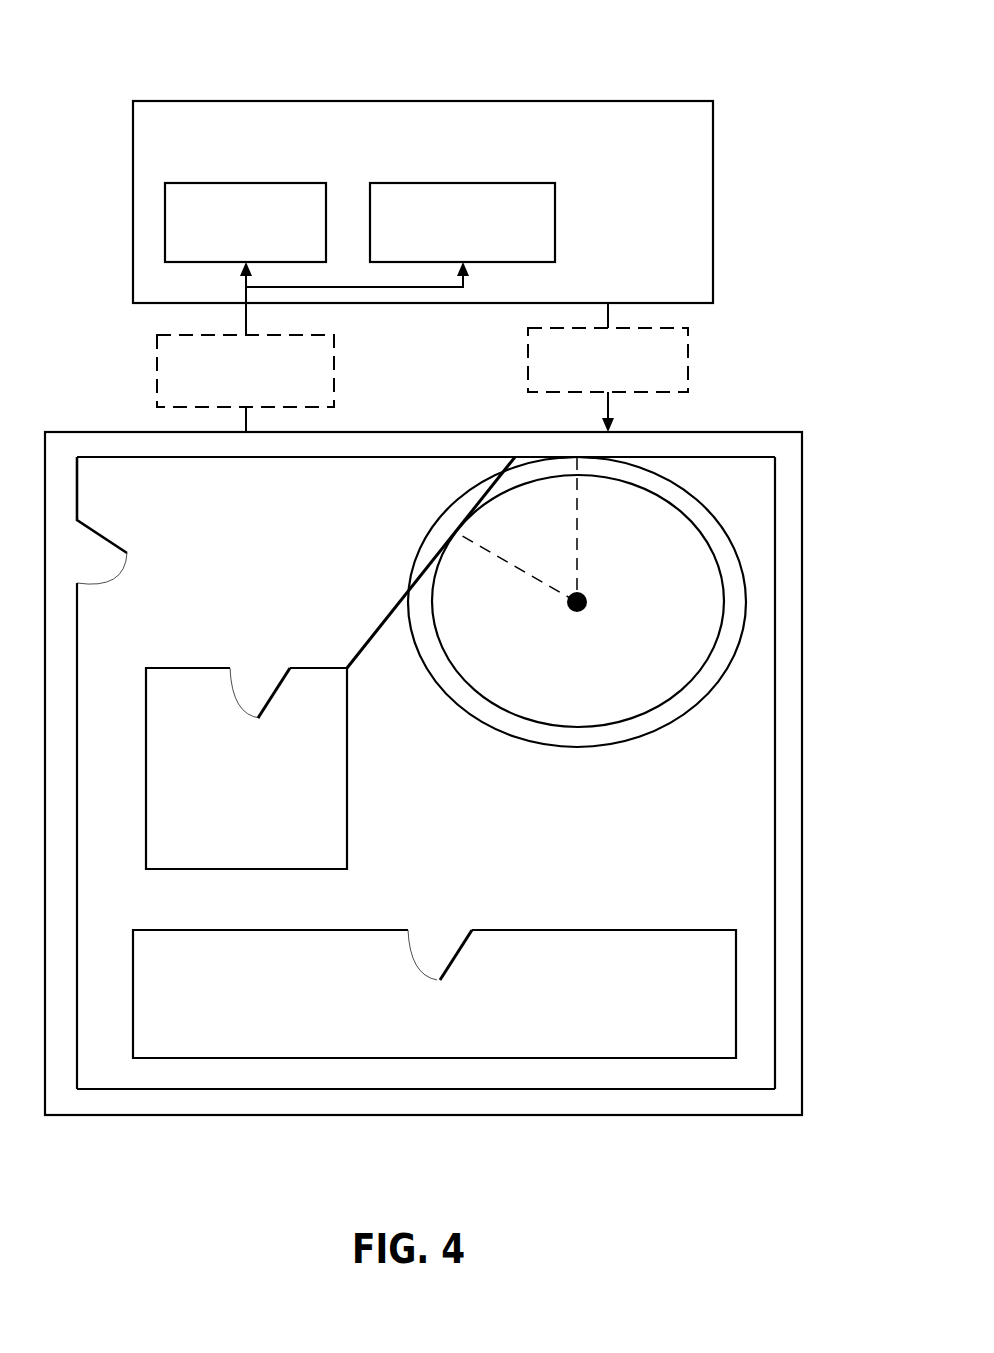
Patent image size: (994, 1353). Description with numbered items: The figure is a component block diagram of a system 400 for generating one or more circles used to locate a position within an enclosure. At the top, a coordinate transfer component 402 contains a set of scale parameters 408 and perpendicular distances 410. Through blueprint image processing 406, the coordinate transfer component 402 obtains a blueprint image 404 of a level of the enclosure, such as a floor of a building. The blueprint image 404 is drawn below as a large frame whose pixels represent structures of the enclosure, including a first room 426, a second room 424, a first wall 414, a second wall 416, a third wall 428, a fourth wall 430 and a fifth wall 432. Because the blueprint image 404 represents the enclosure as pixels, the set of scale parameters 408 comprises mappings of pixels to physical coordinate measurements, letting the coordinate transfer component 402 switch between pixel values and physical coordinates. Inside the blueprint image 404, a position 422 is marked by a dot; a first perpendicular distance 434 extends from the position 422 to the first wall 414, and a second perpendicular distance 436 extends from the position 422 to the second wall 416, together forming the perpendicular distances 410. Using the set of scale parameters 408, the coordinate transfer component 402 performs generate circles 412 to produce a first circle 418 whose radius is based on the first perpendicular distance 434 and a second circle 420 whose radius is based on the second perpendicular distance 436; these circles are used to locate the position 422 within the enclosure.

The system 400 is at (134, 42).
The coordinate transfer component 402 is at (538, 101).
The blueprint image 404 is at (407, 432).
The blueprint image processing 406 is at (335, 368).
The set of scale parameters 408 is at (238, 183).
The perpendicular distances 410 is at (556, 223).
The generate circles 412 is at (688, 350).
The first wall 414 is at (587, 457).
The second wall 416 is at (457, 533).
The first circle 418 is at (617, 743).
The second circle 420 is at (505, 710).
The position 422 is at (590, 595).
The second room 424 is at (580, 930).
The first room 426 is at (183, 667).
The third wall 428 is at (775, 842).
The fourth wall 430 is at (358, 1089).
The fifth wall 432 is at (78, 638).
The first perpendicular distance 434 is at (582, 540).
The second perpendicular distance 436 is at (477, 540).